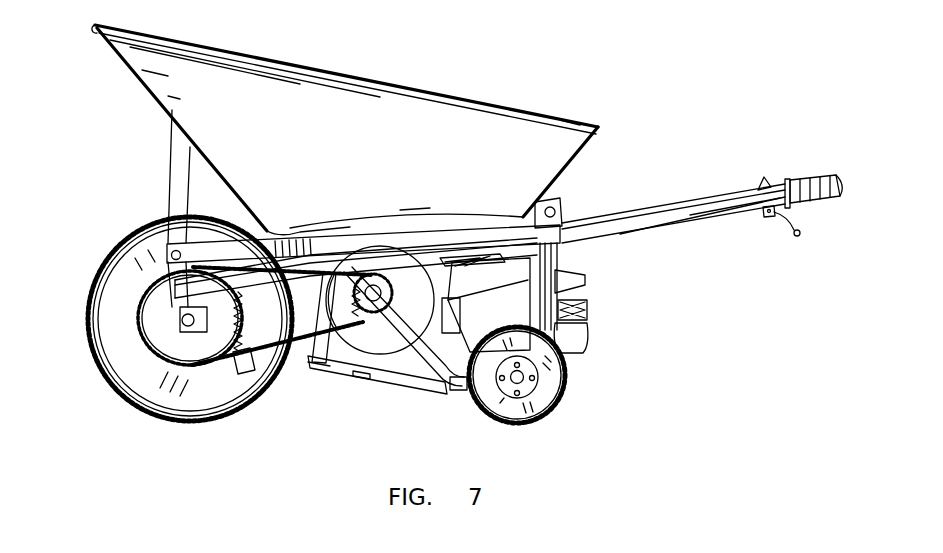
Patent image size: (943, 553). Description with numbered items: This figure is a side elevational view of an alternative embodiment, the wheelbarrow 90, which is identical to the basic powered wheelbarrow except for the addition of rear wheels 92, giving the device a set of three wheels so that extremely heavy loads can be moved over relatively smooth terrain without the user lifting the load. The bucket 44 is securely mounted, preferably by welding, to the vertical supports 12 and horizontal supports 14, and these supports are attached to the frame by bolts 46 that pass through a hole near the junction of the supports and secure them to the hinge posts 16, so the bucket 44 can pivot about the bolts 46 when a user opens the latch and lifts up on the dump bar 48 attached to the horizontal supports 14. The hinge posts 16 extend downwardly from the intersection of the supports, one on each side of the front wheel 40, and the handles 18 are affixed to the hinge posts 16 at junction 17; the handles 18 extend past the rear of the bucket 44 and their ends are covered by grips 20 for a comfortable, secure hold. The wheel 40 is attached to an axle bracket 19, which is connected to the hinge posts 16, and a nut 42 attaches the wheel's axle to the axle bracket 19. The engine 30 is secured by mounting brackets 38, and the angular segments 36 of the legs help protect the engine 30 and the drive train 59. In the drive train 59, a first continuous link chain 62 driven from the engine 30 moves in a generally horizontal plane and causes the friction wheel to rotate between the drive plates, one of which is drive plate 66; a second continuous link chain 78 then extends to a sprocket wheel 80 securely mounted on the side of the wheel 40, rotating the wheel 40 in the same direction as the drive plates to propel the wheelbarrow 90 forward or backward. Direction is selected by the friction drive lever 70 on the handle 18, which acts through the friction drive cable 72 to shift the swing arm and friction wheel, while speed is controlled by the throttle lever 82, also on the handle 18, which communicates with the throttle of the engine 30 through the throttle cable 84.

The wheelbarrow 90 is at (570, 77).
The bucket 44 is at (345, 130).
The vertical supports 12 is at (182, 178).
The horizontal supports 14 is at (310, 246).
The bolts 46 is at (170, 253).
The hinge posts 16 is at (185, 275).
The junction 17 is at (195, 297).
The axle bracket 19 is at (200, 318).
The wheel 40 is at (92, 357).
The sprocket wheel 80 is at (162, 348).
The nut 42 is at (192, 335).
The drive plate 66 is at (387, 291).
The second continuous link chain 78 is at (238, 365).
The drive train 59 is at (297, 365).
The mounting brackets 38 is at (390, 368).
The angular segments 36 is at (438, 373).
The first continuous link chain 62 is at (463, 384).
The engine 30 is at (573, 343).
The dump bar 48 is at (583, 306).
The rear wheels 92 is at (558, 381).
The handles 18 is at (652, 226).
The throttle cable 84 is at (668, 200).
The friction drive cable 72 is at (726, 195).
The throttle lever 82 is at (762, 178).
The grips 20 is at (813, 176).
The friction drive lever 70 is at (787, 230).